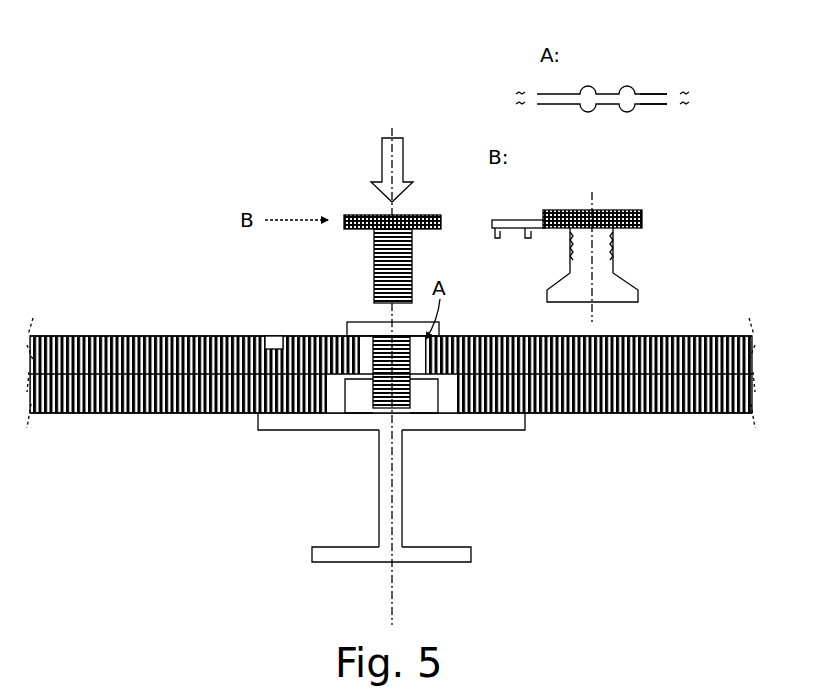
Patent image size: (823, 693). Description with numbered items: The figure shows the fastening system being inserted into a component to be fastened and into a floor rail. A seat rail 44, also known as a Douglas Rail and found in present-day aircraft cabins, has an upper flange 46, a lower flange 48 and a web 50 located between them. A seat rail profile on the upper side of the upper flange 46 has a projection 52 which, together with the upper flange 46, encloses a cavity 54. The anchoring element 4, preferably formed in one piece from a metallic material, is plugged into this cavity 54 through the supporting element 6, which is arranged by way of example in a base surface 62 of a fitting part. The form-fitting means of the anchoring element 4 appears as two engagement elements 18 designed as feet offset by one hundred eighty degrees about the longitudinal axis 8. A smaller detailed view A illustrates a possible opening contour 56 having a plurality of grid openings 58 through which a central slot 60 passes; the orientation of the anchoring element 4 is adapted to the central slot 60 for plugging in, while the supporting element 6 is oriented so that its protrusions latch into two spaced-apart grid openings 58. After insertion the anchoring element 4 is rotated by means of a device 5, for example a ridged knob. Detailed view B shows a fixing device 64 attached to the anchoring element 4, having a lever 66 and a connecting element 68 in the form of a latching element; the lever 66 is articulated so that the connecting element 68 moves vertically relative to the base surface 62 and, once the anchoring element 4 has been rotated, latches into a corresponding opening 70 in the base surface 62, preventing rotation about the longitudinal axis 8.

The anchoring element 4 is at (374, 270).
The device 5 is at (341, 214).
The supporting element 6 is at (368, 346).
The longitudinal axis 8 is at (471, 376).
The engagement element 18 is at (640, 296).
The seat rail 44 is at (538, 490).
The upper flange 46 is at (258, 417).
The lower flange 48 is at (333, 561).
The web 50 is at (385, 518).
The projection 52 is at (345, 395).
The cavity 54 is at (420, 395).
The opening contour 56 is at (627, 86).
The grid opening 58 is at (588, 86).
The central slot 60 is at (655, 94).
The base surface 62 is at (703, 336).
The fixing device 64 is at (528, 240).
The lever 66 is at (510, 220).
The connecting element 68 is at (497, 240).
The opening 70 is at (272, 343).